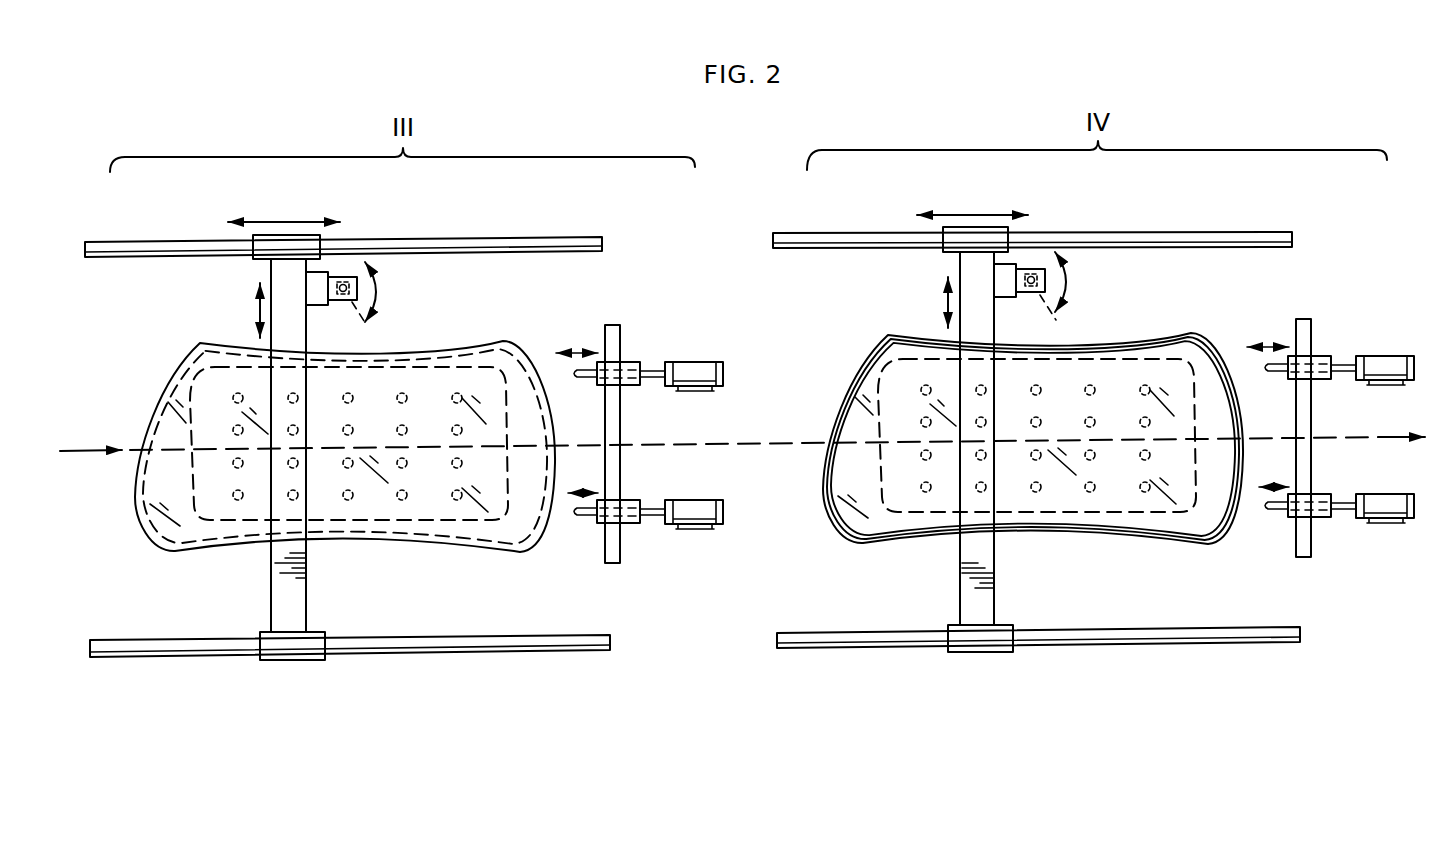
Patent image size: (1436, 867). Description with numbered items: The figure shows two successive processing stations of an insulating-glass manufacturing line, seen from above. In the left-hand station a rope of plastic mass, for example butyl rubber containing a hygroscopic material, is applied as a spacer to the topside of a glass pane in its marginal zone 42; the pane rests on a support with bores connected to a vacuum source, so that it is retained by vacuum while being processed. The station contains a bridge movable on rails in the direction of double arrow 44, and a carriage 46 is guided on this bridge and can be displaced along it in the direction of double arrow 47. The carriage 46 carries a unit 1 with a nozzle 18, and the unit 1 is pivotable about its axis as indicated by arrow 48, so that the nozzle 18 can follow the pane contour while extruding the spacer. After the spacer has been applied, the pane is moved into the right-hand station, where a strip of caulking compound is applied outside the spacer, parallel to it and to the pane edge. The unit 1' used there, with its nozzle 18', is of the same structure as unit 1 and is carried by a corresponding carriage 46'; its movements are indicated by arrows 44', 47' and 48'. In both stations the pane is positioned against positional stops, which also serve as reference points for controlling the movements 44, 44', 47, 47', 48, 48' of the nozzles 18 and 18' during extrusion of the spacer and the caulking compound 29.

The unit 1 is at (355, 249).
The unit 1' is at (1046, 243).
The nozzle 18 is at (373, 324).
The nozzle 18' is at (1069, 319).
The strip of caulking compound 29 is at (848, 536).
The marginal zone 42 is at (503, 345).
The double arrow 44 is at (284, 205).
The arrow 44' is at (972, 192).
The carriage 46 is at (258, 282).
The carriage 46' is at (950, 276).
The double arrow 47 is at (224, 310).
The arrow 47' is at (911, 302).
The arrow 48 is at (411, 292).
The arrow 48' is at (1099, 282).